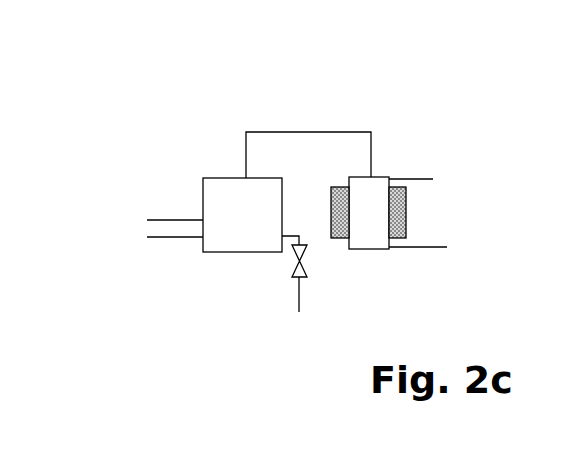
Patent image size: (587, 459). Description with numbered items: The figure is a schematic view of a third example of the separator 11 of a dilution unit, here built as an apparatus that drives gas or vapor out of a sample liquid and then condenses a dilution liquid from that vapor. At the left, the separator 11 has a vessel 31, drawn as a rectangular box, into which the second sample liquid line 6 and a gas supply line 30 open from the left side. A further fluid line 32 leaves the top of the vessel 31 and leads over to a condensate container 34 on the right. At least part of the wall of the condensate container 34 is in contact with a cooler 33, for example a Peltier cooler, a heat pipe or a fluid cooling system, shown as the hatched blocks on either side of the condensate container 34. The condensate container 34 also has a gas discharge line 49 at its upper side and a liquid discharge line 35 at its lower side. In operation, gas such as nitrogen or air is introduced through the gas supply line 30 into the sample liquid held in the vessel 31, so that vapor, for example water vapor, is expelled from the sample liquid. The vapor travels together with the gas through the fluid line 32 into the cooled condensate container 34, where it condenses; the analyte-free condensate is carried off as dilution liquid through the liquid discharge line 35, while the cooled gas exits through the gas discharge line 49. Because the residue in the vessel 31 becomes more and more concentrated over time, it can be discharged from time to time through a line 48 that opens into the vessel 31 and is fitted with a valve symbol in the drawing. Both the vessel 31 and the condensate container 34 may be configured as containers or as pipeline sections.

The separator 11 is at (145, 81).
The second sample liquid line 6 is at (167, 219).
The gas supply line 30 is at (156, 240).
The vessel 31 is at (237, 187).
The fluid line 32 is at (290, 132).
The cooler 33 is at (403, 228).
The condensate container 34 is at (372, 243).
The liquid discharge line 35 is at (435, 249).
The line 48 is at (299, 295).
The gas discharge line 49 is at (397, 178).